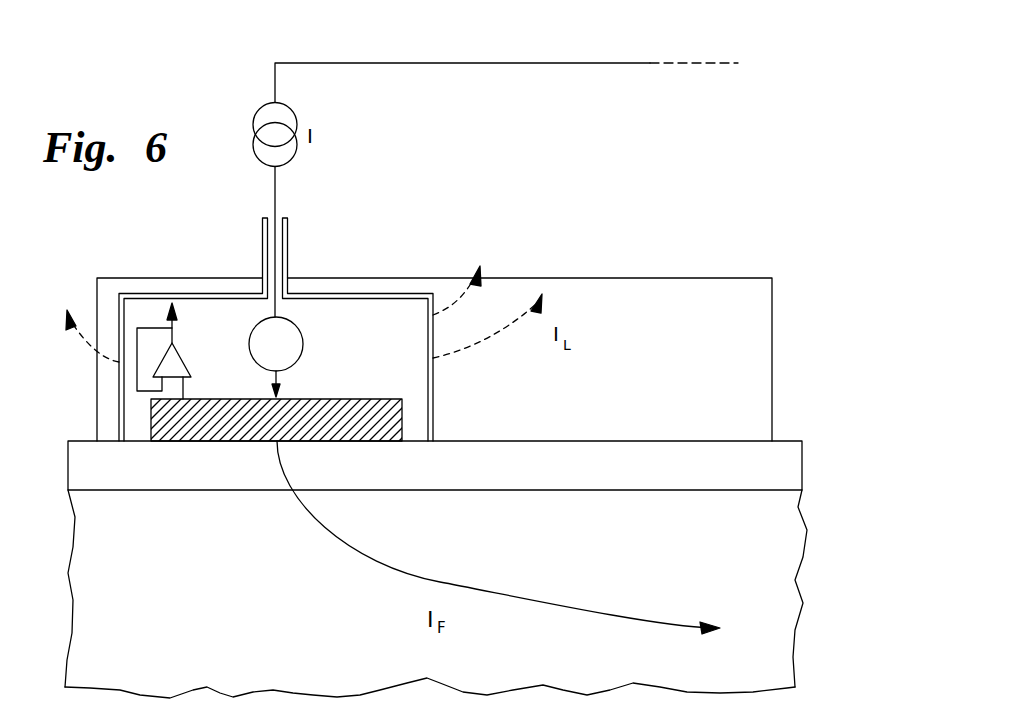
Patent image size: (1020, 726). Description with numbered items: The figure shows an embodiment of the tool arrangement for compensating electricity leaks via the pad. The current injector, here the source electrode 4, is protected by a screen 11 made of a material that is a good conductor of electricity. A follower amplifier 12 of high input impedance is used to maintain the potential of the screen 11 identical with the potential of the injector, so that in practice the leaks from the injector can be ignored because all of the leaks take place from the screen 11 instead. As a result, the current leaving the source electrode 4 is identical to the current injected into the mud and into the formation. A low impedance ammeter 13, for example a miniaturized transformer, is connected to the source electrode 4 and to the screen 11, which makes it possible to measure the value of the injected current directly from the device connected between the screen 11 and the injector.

The source electrode 4 is at (377, 403).
The screen 11 is at (433, 389).
The follower amplifier 12 is at (188, 366).
The low impedance ammeter 13 is at (303, 344).